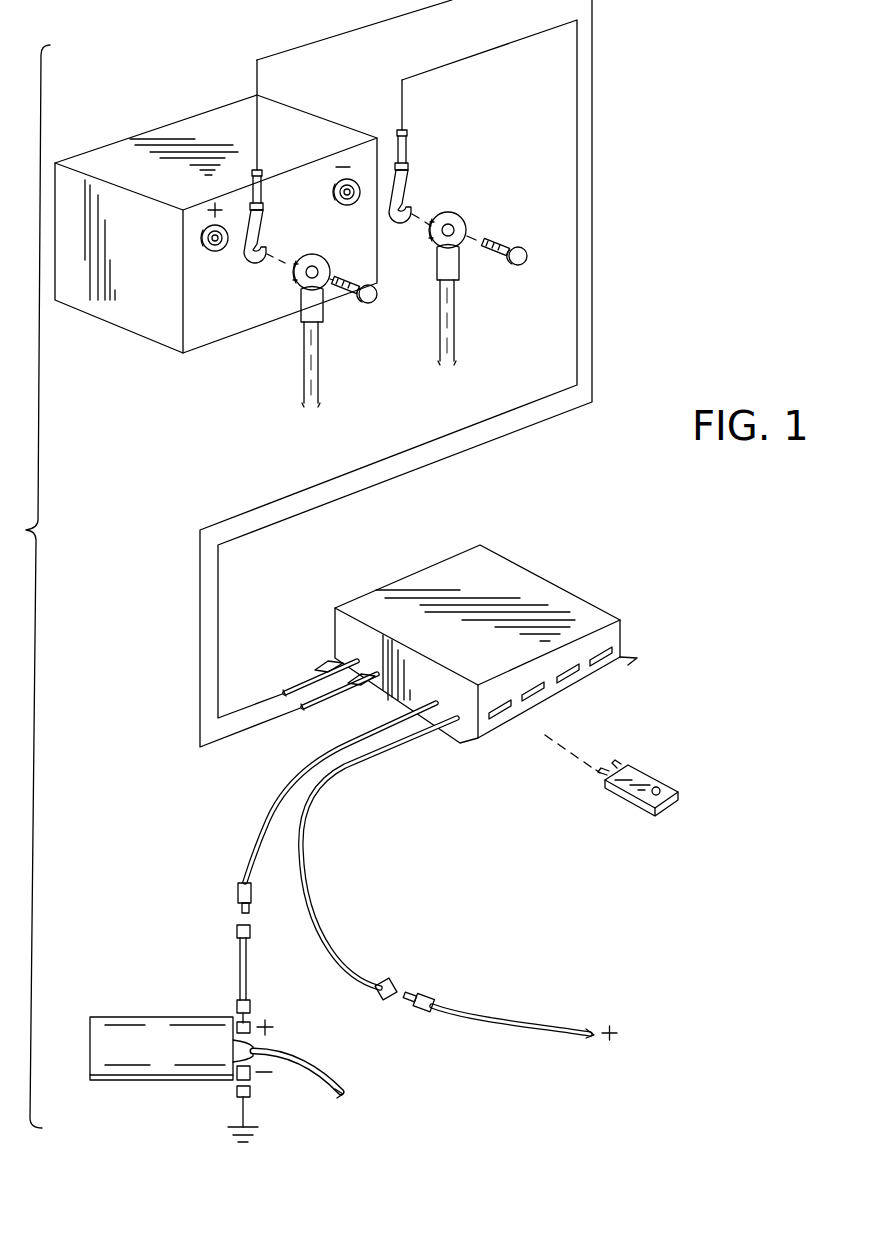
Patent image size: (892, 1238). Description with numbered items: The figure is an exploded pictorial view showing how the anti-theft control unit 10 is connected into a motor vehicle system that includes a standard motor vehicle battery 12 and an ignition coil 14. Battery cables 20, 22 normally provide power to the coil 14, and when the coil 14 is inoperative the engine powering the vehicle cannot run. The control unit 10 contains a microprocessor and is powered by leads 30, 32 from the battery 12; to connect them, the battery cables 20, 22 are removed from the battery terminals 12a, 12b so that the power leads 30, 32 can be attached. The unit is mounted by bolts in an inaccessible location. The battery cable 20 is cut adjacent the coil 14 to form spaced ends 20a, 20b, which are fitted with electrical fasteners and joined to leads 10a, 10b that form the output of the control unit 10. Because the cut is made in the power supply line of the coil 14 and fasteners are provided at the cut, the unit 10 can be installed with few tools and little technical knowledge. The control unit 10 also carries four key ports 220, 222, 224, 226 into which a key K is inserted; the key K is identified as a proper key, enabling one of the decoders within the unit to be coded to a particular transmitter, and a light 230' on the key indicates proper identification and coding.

The anti-theft control unit 10 is at (561, 591).
The lead 10a is at (295, 780).
The lead 10b is at (318, 813).
The motor vehicle battery 12 is at (172, 125).
The battery terminal 12a is at (217, 251).
The battery terminal 12b is at (337, 203).
The ignition coil 14 is at (118, 1027).
The battery cable 20 is at (317, 373).
The spaced end 20a is at (237, 930).
The spaced end 20b is at (425, 993).
The battery cable 22 is at (450, 313).
The power lead 30 is at (333, 478).
The power lead 32 is at (428, 465).
The key port 220 is at (490, 722).
The key port 222 is at (535, 704).
The key port 224 is at (572, 686).
The key port 226 is at (612, 668).
The light 230' is at (657, 775).
The key K is at (660, 772).